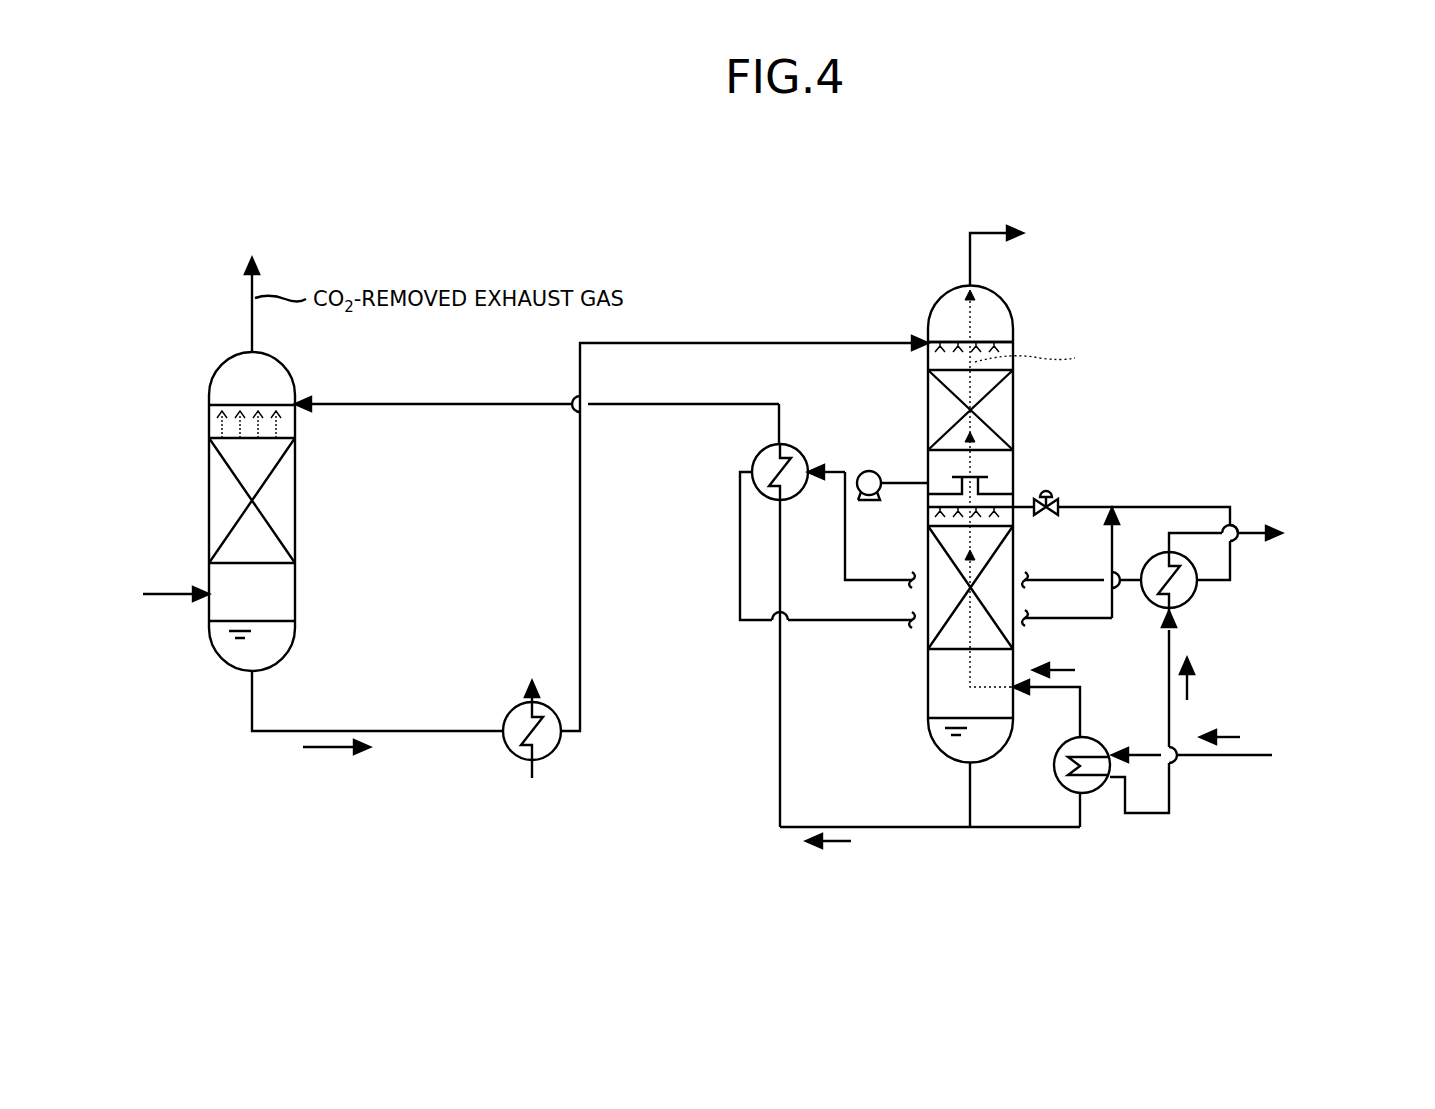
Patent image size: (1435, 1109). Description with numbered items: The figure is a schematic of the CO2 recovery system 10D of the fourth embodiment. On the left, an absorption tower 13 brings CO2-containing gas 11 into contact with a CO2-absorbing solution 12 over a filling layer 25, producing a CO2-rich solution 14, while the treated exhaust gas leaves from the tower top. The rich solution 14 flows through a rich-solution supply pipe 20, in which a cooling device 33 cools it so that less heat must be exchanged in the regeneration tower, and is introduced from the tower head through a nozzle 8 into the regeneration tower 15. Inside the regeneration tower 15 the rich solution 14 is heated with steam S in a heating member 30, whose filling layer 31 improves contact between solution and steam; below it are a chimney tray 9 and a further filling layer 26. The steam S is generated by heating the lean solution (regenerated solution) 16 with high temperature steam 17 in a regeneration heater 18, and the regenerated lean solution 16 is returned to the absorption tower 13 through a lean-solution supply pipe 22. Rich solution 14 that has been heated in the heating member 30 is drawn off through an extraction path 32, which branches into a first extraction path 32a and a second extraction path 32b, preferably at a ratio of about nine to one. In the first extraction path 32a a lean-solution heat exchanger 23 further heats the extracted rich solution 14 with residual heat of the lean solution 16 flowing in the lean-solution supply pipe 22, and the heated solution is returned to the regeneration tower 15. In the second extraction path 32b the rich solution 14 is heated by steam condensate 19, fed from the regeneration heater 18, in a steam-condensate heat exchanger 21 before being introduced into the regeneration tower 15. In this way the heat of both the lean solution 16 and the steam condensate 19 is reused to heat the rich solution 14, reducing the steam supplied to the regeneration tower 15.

The CO2 recovery system 10D is at (695, 213).
The nozzle 8 is at (1013, 340).
The chimney tray 9 is at (988, 478).
The CO2-containing gas 11 is at (152, 598).
The CO2-absorbing solution 12 is at (283, 429).
The absorption tower 13 is at (295, 582).
The rich solution 14 is at (316, 749).
The regeneration tower 15 is at (928, 688).
The lean solution (regenerated solution) 16 is at (1063, 672).
The high temperature steam 17 is at (1240, 740).
The regeneration heater 18 is at (1082, 795).
The steam condensate 19 is at (1190, 692).
The rich-solution supply pipe 20 is at (400, 731).
The steam-condensate heat exchanger 21 is at (1268, 645).
The lean-solution supply pipe 22 is at (348, 404).
The lean-solution heat exchanger 23 is at (755, 456).
The filling layer 25 is at (209, 460).
The filling layer 26 is at (1013, 548).
The heating member 30 is at (1049, 410).
The filling layer 31 is at (928, 392).
The extraction path 32 is at (772, 558).
The first extraction path 32a is at (752, 620).
The second extraction path 32b is at (867, 580).
The cooling device 33 is at (552, 752).